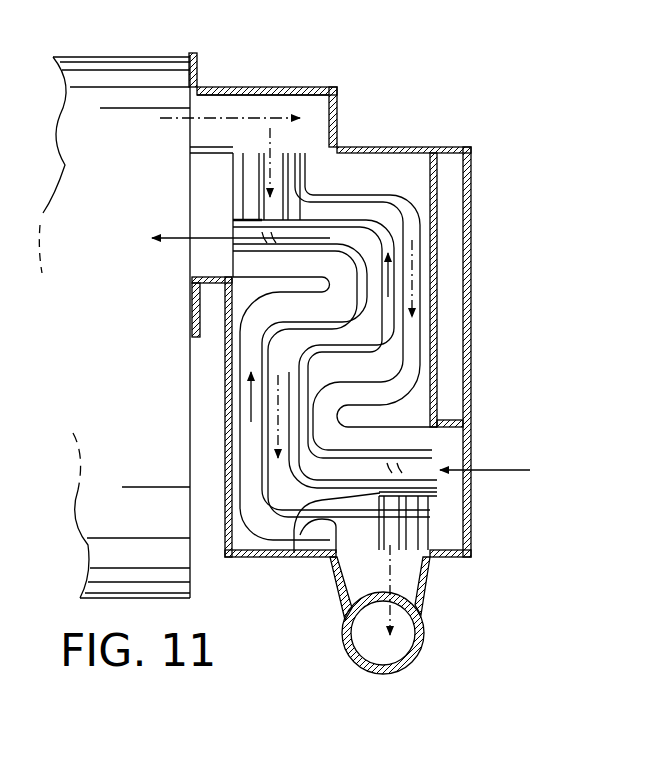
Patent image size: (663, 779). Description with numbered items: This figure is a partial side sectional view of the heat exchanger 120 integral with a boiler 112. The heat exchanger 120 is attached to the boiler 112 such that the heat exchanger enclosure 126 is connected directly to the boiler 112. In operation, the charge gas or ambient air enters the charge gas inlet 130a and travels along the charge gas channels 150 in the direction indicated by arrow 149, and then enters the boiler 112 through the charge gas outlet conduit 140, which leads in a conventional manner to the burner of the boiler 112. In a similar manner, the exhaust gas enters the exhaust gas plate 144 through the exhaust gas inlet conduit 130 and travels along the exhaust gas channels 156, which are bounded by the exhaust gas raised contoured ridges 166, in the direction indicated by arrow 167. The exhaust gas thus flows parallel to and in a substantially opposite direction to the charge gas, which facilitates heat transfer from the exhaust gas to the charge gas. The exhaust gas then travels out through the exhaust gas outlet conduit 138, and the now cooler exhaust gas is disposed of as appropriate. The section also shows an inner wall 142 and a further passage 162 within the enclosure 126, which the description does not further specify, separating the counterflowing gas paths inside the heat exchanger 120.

The boiler 112 is at (120, 56).
The heat exchanger 120 is at (508, 283).
The heat exchanger enclosure 126 is at (471, 217).
The exhaust gas inlet conduit 130 is at (300, 107).
The charge gas inlet 130a is at (473, 483).
The exhaust gas outlet conduit 138 is at (412, 585).
The charge gas outlet conduit 140 is at (205, 167).
The partition wall 142 is at (398, 187).
The exhaust gas plate 144 is at (318, 172).
The arrow 149 is at (247, 417).
The charge gas channels 150 is at (371, 361).
The exhaust gas channels 156 is at (292, 168).
The passage 162 is at (387, 333).
The exhaust gas raised contoured ridges 166 is at (258, 182).
The arrow 167 is at (412, 283).